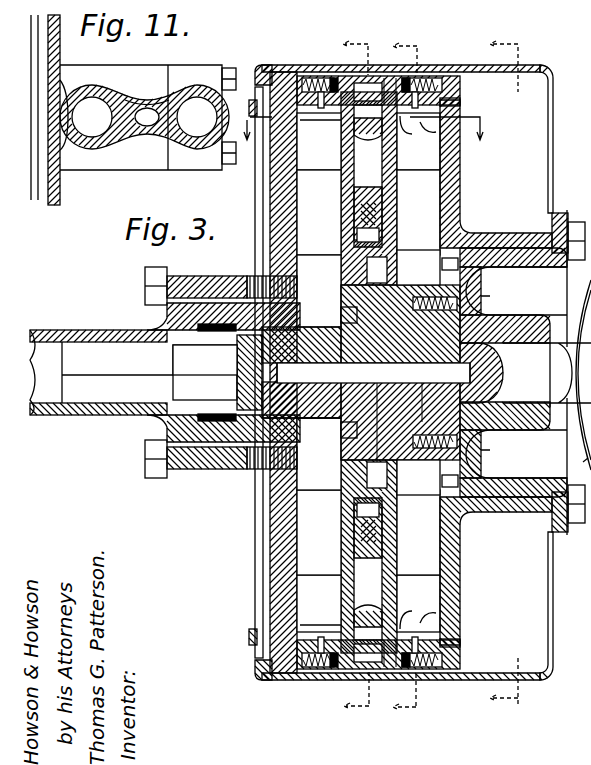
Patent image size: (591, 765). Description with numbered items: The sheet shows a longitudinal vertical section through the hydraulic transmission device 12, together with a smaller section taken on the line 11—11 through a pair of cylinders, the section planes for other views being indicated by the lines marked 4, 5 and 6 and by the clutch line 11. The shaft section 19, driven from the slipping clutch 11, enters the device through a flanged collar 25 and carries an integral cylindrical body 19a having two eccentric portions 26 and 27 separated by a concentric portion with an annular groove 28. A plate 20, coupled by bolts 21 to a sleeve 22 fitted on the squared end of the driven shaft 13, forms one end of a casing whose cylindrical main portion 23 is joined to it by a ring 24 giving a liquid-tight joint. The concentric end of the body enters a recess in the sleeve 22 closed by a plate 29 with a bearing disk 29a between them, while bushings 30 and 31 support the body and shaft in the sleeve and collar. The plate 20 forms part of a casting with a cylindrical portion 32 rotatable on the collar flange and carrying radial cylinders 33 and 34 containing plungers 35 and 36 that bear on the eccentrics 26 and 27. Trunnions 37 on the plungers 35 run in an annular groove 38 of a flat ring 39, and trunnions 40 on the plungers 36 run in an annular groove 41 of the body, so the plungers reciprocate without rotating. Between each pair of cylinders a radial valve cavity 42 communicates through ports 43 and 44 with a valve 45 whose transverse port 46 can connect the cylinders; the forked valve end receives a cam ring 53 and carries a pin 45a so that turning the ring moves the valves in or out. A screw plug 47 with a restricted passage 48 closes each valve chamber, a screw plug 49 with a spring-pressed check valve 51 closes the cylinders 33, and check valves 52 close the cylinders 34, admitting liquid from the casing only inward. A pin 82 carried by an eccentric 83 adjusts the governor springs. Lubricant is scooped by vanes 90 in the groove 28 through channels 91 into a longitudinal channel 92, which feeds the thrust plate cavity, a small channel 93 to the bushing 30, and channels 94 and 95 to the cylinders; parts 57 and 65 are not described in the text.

In FIG. 3, the section line 4 is at (406, 378).
In FIG. 3, the section line 5 is at (505, 375).
In FIG. 3, the section line 6 is at (357, 376).
In FIG. 3, the slipping clutch 11 is at (367, 126).
In FIG. 3, the device 12 is at (558, 620).
In FIG. 3, the driven shaft 13 is at (120, 414).
In FIG. 3, the shaft section 19 is at (525, 373).
In FIG. 3, the cylindrical body 19a is at (361, 372).
In FIG. 11, the plate 20 is at (62, 190).
In FIG. 3, the plate 20 is at (270, 547).
In FIG. 3, the bolts 21 is at (192, 486).
In FIG. 3, the sleeve 22 is at (66, 428).
In FIG. 3, the cylindrical main portion of casing 23 is at (464, 690).
In FIG. 3, the ring 24 is at (252, 696).
In FIG. 3, the flanged collar 25 is at (526, 462).
In FIG. 3, the eccentric portion 26 is at (432, 311).
In FIG. 3, the eccentric portion 27 is at (301, 434).
In FIG. 3, the annular groove 28 is at (418, 373).
In FIG. 3, the plate 29 is at (237, 394).
In FIG. 3, the bearing disk 29a is at (237, 358).
In FIG. 3, the bearing shell 30 is at (535, 440).
In FIG. 3, the bearing shell 31 is at (218, 488).
In FIG. 11, the cylindrical portion 32 is at (144, 124).
In FIG. 3, the cylindrical portion 32 is at (470, 556).
In FIG. 11, the cylindrical cavities 33 is at (197, 117).
In FIG. 3, the cylindrical cavities 33 is at (444, 128).
In FIG. 11, the cylindrical cavities 34 is at (92, 117).
In FIG. 3, the cylindrical cavities 34 is at (319, 372).
In FIG. 3, the plungers 35 is at (418, 372).
In FIG. 3, the plungers 36 is at (319, 372).
In FIG. 3, the trunnion 37 is at (442, 258).
In FIG. 3, the annular groove 38 is at (490, 468).
In FIG. 3, the flat ring 39 is at (493, 380).
In FIG. 3, the trunnion 40 is at (325, 430).
In FIG. 3, the annular groove 41 is at (319, 388).
In FIG. 3, the radial valve cavity 42 is at (334, 694).
In FIG. 3, the port 43 is at (420, 626).
In FIG. 3, the port 44 is at (332, 626).
In FIG. 11, the valve 45 is at (146, 100).
In FIG. 3, the valve 45 is at (369, 372).
In FIG. 3, the pin 45a is at (408, 542).
In FIG. 11, the transverse port 46 is at (147, 117).
In FIG. 3, the transverse port 46 is at (370, 622).
In FIG. 3, the screw plug 47 is at (360, 684).
In FIG. 3, the restricted passage 48 is at (380, 686).
In FIG. 3, the screw plug 49 is at (432, 690).
In FIG. 3, the check valve 51 is at (454, 660).
In FIG. 3, the check valve 52 is at (300, 694).
In FIG. 3, the cam ring 53 is at (330, 534).
In FIG. 3, the pin 57 is at (442, 481).
In FIG. 3, the wheel rim 65 is at (585, 300).
In FIG. 3, the pin 82 is at (580, 375).
In FIG. 3, the eccentric 83 is at (580, 469).
In FIG. 3, the vanes 90 is at (377, 375).
In FIG. 3, the channels 91 is at (367, 415).
In FIG. 3, the longitudinal channel 92 is at (373, 373).
In FIG. 3, the small channel 93 is at (449, 373).
In FIG. 3, the channel 94 is at (409, 395).
In FIG. 3, the channel 95 is at (287, 373).